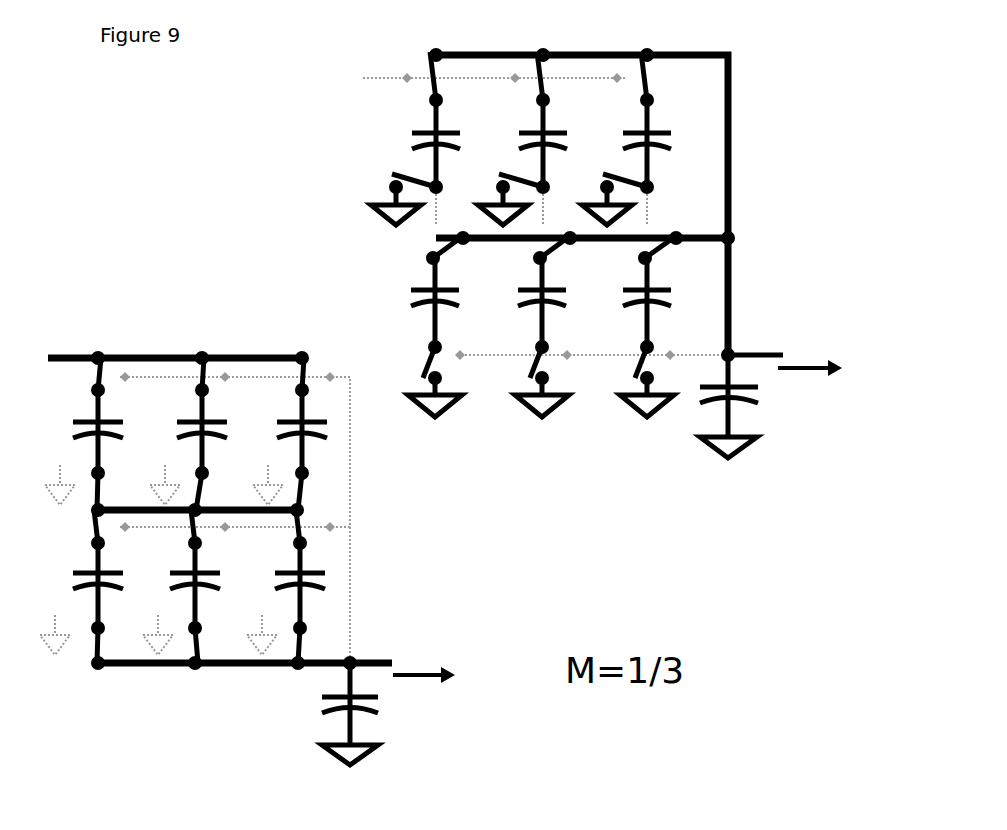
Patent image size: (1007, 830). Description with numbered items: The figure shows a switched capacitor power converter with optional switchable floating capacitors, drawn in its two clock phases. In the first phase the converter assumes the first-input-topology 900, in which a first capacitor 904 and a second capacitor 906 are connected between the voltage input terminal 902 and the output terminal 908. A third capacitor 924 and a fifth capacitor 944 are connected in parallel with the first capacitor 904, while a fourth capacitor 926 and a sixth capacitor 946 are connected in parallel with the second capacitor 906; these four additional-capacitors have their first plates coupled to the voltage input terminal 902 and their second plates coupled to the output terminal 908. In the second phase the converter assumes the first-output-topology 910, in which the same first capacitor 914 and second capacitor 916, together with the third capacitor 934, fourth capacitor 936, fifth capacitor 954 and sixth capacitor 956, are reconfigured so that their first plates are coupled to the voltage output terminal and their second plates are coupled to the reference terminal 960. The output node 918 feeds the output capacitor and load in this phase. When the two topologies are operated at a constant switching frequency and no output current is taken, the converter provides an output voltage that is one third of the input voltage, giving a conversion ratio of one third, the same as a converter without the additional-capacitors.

The first-input-topology 900 is at (141, 707).
The voltage input terminal 902 is at (101, 356).
The first capacitor 904 is at (86, 420).
The second capacitor 906 is at (86, 572).
The output terminal 908 is at (345, 667).
The first-output-topology 910 is at (768, 77).
The first capacitor 914 is at (449, 130).
The second capacitor 916 is at (425, 288).
The output node 918 is at (730, 352).
The third capacitor 924 is at (186, 420).
The fourth capacitor 926 is at (183, 572).
The third capacitor 934 is at (554, 130).
The fourth capacitor 936 is at (546, 288).
The fifth capacitor 944 is at (289, 420).
The sixth capacitor 946 is at (293, 572).
The fifth capacitor 954 is at (660, 130).
The sixth capacitor 956 is at (661, 288).
The reference terminal 960 is at (715, 449).